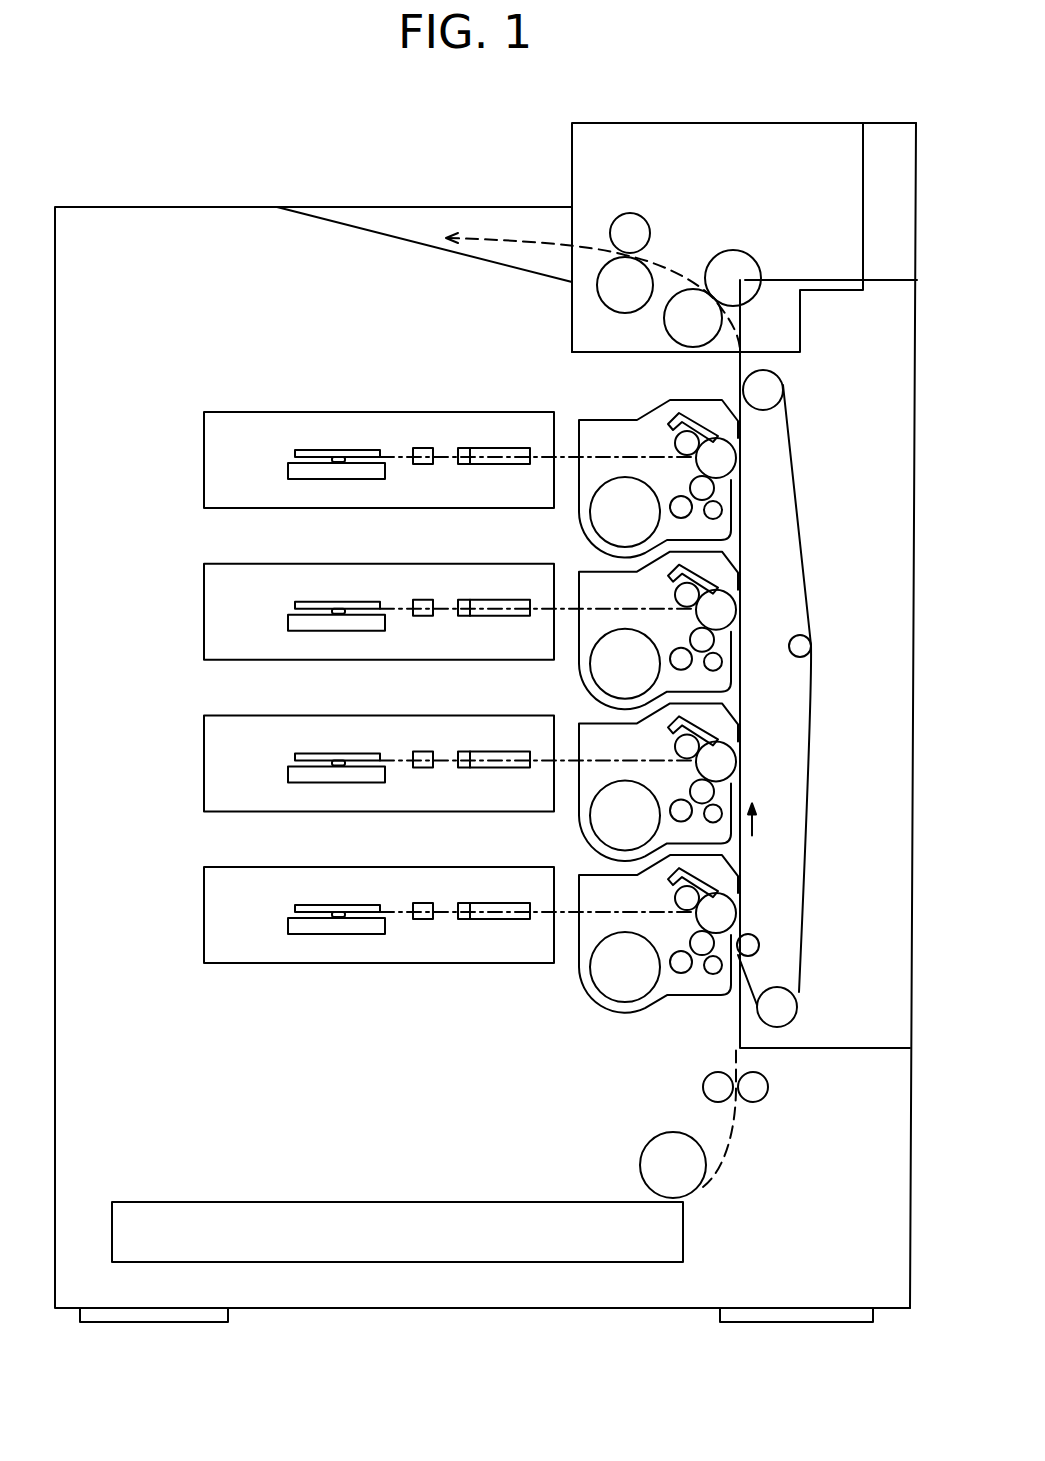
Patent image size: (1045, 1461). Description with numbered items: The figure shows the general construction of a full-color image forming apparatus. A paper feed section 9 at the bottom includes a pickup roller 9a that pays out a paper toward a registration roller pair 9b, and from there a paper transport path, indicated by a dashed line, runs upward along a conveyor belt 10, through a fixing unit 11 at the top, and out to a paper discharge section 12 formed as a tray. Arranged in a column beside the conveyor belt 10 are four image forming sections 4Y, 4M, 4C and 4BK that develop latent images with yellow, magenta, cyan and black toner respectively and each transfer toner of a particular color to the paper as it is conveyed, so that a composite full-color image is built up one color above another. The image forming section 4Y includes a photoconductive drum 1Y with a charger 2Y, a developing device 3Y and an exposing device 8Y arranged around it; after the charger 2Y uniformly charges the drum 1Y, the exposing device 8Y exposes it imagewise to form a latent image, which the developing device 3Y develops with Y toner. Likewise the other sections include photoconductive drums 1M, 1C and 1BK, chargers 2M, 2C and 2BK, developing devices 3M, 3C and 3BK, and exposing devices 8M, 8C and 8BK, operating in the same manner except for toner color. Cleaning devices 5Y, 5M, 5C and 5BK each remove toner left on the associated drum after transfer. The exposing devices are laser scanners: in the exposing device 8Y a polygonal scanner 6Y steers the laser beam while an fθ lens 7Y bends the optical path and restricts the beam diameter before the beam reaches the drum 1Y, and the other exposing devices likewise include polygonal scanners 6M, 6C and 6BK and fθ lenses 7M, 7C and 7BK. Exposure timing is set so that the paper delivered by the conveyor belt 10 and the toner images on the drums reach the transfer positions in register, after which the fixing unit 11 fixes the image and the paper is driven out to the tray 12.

The photoconductive drum 1BK is at (736, 459).
The photoconductive drum 1C is at (748, 606).
The photoconductive drum 1M is at (750, 757).
The photoconductive drum 1Y is at (747, 909).
The charger 2BK is at (676, 443).
The charger 2C is at (643, 593).
The charger 2M is at (643, 744).
The charger 2Y is at (643, 896).
The developing device 3BK is at (709, 492).
The developing device 3C is at (745, 633).
The developing device 3M is at (748, 784).
The developing device 3Y is at (745, 936).
The image forming section 4BK is at (318, 451).
The image forming section 4C is at (318, 620).
The image forming section 4M is at (318, 763).
The image forming section 4Y is at (315, 917).
The cleaning device 5BK is at (694, 413).
The cleaning device 5C is at (731, 562).
The cleaning device 5M is at (734, 713).
The cleaning device 5Y is at (731, 865).
The polygonal scanner 6BK is at (296, 480).
The polygonal scanner 6C is at (320, 655).
The polygonal scanner 6M is at (320, 806).
The polygonal scanner 6Y is at (320, 958).
The fθ lens 7BK is at (494, 464).
The fθ lens 7C is at (471, 654).
The fθ lens 7M is at (471, 805).
The fθ lens 7Y is at (471, 957).
The exposing device 8BK is at (383, 508).
The exposing device 8C is at (379, 638).
The exposing device 8M is at (379, 789).
The exposing device 8Y is at (379, 941).
The paper feed section 9 is at (623, 1250).
The pickup roller 9a is at (641, 1160).
The registration roller pair 9b is at (762, 1098).
The conveyor belt 10 is at (801, 531).
The fixing unit 11 is at (756, 140).
The paper discharge section 12 is at (381, 233).